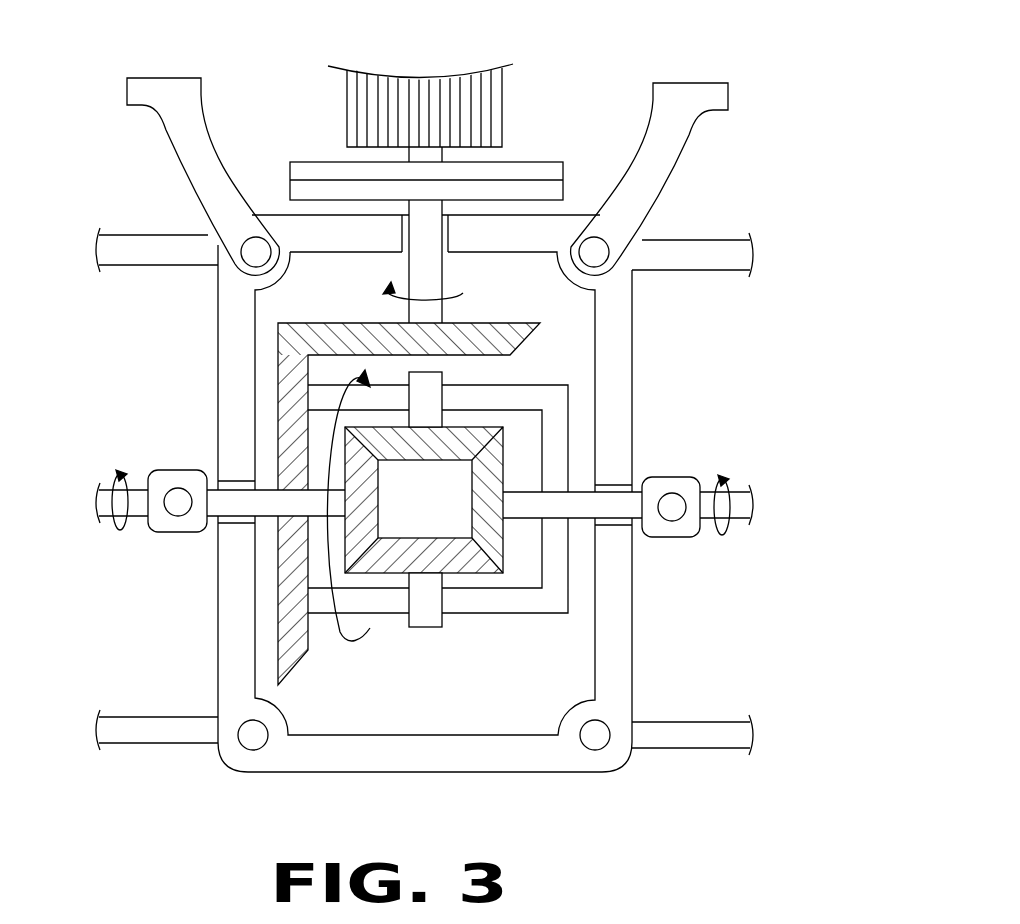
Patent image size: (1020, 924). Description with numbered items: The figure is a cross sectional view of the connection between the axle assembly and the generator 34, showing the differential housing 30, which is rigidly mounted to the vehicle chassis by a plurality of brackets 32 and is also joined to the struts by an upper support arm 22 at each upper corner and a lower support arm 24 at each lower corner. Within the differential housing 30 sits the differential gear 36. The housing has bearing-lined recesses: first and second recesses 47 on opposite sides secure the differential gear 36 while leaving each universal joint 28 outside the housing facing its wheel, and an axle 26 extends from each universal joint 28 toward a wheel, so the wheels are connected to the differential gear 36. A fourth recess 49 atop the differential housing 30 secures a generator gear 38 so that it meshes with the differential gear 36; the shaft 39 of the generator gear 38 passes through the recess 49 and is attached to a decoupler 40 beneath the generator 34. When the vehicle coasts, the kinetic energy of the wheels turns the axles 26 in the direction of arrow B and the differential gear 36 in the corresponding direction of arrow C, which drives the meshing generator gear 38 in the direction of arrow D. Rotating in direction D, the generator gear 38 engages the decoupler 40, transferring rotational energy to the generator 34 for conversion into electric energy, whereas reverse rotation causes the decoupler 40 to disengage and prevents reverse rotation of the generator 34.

The upper support arm 22 is at (122, 246).
The lower support arm 24 is at (158, 742).
The axle 26 is at (106, 500).
The universal joint 28 is at (178, 493).
The differential housing 30 is at (618, 347).
The bracket 32 is at (143, 93).
The generator 34 is at (430, 78).
The differential gear 36 is at (440, 362).
The generator gear 38 is at (343, 323).
The shaft 39 is at (417, 260).
The decoupler 40 is at (510, 172).
The first and second recesses 47 is at (233, 482).
The fourth recess 49 is at (453, 243).
The directional arrow B is at (118, 530).
The directional arrow C is at (338, 637).
The directional arrow D is at (463, 293).